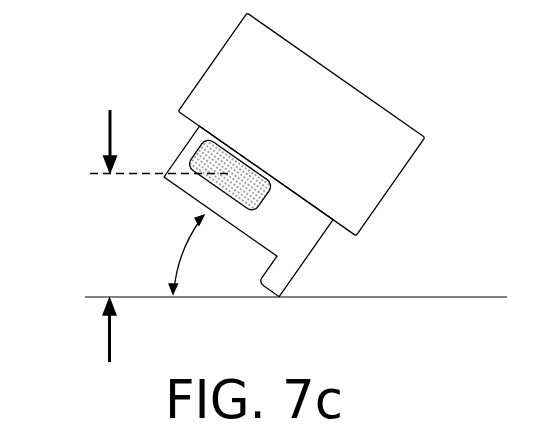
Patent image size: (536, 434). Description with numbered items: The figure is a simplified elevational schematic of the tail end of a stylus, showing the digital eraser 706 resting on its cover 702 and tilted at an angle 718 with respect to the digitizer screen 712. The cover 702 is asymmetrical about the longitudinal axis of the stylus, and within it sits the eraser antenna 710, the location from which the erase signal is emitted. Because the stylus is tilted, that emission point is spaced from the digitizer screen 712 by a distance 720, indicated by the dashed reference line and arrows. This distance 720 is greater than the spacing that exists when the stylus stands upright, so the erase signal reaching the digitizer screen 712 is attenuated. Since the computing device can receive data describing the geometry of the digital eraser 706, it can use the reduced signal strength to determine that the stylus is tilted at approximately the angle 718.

The cover 702 is at (312, 250).
The digital eraser 706 is at (356, 61).
The eraser antenna 710 is at (215, 155).
The digitizer screen 712 is at (430, 296).
The angle θ 718 is at (200, 269).
The distance d8 720 is at (116, 217).